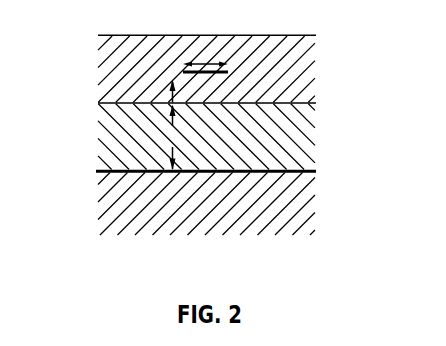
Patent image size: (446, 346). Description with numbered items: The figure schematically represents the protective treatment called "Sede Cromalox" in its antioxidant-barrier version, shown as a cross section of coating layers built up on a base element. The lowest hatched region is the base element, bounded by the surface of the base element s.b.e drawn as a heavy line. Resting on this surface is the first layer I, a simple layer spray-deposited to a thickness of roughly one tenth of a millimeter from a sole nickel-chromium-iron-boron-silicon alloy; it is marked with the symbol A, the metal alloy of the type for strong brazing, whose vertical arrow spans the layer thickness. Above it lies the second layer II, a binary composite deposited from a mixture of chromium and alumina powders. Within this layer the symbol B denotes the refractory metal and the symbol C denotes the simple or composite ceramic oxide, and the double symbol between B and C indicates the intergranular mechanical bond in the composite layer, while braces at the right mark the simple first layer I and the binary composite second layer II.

The second layer II is at (330, 102).
The first layer I is at (330, 107).
The surface of the base element s.b.e is at (96, 172).
The metal alloy of the type for strong brazing A is at (173, 138).
The refractory metal B is at (170, 78).
The simple or composite ceramic oxide C is at (214, 67).